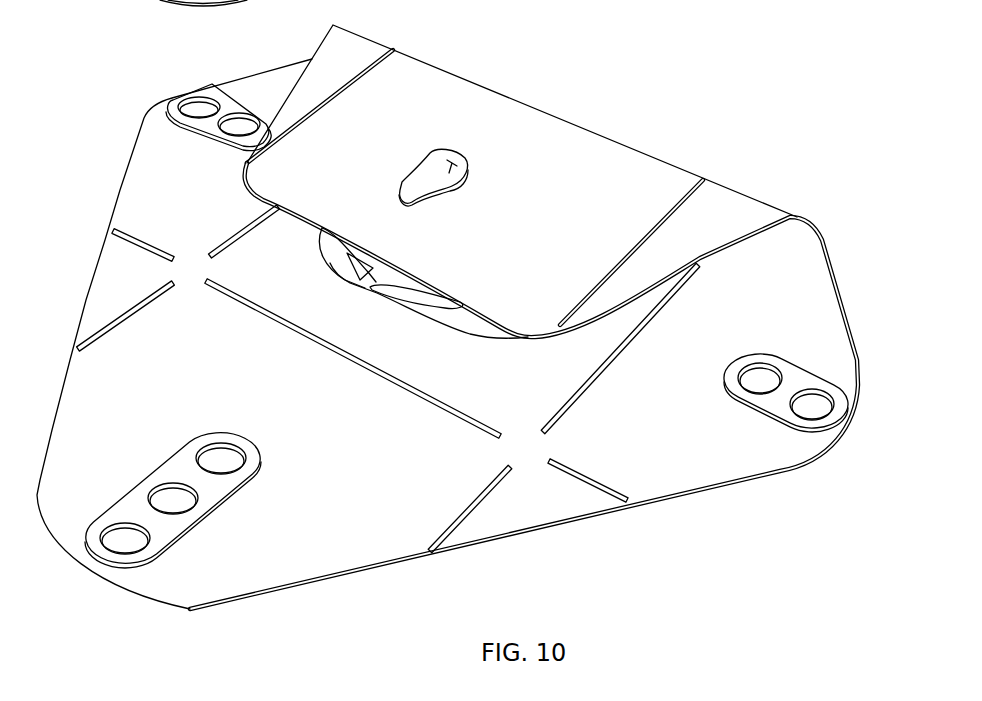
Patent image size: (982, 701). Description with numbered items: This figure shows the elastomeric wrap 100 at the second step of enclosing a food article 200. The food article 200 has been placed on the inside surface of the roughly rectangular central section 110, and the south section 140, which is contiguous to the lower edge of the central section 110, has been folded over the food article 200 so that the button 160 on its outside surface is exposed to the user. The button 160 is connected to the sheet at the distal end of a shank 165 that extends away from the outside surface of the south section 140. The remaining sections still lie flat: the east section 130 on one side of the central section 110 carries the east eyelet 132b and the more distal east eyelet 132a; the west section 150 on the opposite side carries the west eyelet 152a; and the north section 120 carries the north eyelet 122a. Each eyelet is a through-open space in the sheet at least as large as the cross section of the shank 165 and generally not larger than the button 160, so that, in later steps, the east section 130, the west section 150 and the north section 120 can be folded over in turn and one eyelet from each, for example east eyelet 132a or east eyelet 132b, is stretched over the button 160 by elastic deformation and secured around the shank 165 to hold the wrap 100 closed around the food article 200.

The wrap 100 is at (741, 117).
The central section 110 is at (533, 394).
The north section 120 is at (348, 500).
The north eyelet 122a is at (150, 540).
The east section 130 is at (184, 209).
The east eyelet 132a is at (213, 93).
The east eyelet 132b is at (252, 145).
The south section 140 is at (543, 256).
The west section 150 is at (668, 449).
The west eyelet 152a is at (800, 422).
The button 160 is at (455, 163).
The shank 165 is at (470, 180).
The food article 200 is at (322, 262).